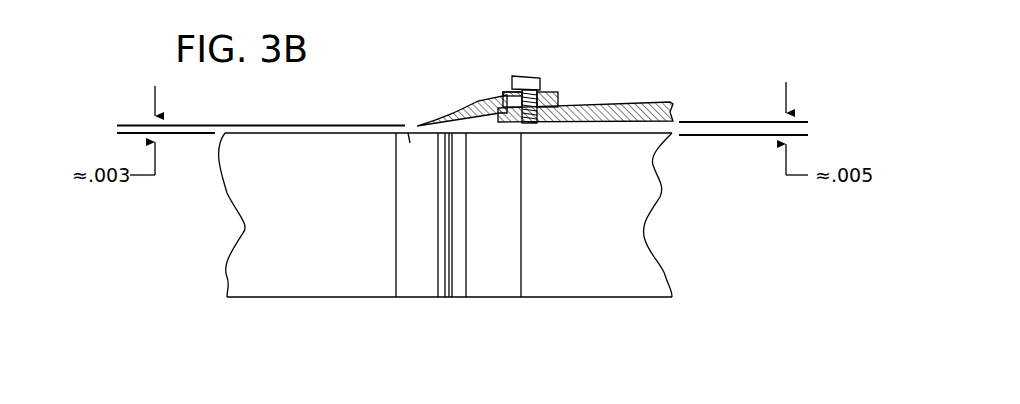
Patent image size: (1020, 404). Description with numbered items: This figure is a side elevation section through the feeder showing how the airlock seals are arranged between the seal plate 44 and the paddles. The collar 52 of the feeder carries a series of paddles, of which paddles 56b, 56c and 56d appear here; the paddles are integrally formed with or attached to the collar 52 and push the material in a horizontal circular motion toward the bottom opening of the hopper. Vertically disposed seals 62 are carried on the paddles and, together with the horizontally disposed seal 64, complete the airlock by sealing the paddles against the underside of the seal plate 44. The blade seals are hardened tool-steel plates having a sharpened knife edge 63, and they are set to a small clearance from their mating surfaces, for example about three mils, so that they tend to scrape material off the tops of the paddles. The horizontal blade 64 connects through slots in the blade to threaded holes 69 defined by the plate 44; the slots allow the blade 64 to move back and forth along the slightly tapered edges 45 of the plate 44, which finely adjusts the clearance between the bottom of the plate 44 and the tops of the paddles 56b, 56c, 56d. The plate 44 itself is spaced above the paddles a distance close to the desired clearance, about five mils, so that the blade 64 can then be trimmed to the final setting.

The seal plate 44 is at (673, 112).
The tapered edges 45 is at (573, 100).
The collar 52 is at (410, 142).
The paddle 56b is at (267, 280).
The paddle 56c is at (455, 285).
The paddle 56d is at (595, 277).
The vertical seals 62 is at (438, 210).
The knife edge 63 is at (418, 124).
The horizontal seals 64 is at (553, 88).
The threaded holes 69 is at (533, 123).